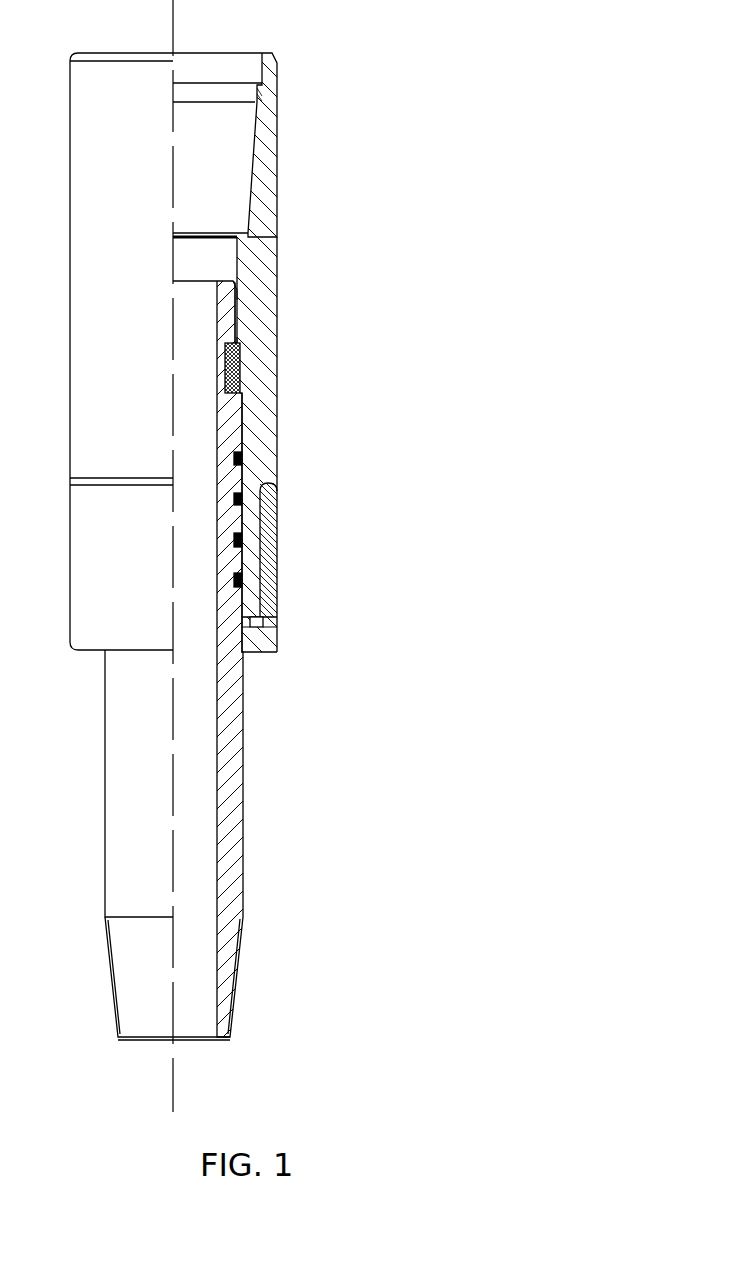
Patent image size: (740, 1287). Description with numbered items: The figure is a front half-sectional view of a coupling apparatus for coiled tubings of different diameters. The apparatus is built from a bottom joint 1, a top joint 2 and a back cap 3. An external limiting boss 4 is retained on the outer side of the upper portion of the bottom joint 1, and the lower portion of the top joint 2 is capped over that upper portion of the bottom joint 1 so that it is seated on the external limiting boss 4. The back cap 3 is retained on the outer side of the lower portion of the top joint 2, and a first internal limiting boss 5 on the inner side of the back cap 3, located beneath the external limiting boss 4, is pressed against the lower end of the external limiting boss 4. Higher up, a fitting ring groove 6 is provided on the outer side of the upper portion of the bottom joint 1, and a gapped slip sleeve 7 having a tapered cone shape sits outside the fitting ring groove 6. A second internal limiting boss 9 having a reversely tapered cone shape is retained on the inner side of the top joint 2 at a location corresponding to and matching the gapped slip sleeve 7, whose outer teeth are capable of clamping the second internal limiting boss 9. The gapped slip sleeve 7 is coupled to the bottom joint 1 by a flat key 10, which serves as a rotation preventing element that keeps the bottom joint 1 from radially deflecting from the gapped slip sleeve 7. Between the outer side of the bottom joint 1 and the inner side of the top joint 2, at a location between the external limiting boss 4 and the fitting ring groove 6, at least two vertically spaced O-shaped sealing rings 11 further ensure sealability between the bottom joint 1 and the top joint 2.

The bottom joint 1 is at (228, 857).
The top joint 2 is at (267, 228).
The back cap 3 is at (275, 575).
The external limiting boss 4 is at (273, 613).
The first internal limiting boss 5 is at (277, 640).
The fitting ring groove 6 is at (237, 408).
The gapped slip sleeve 7 is at (237, 325).
The second internal limiting boss 9 is at (237, 294).
The flat key 10 is at (237, 370).
The O-shaped sealing ring 11 is at (267, 485).